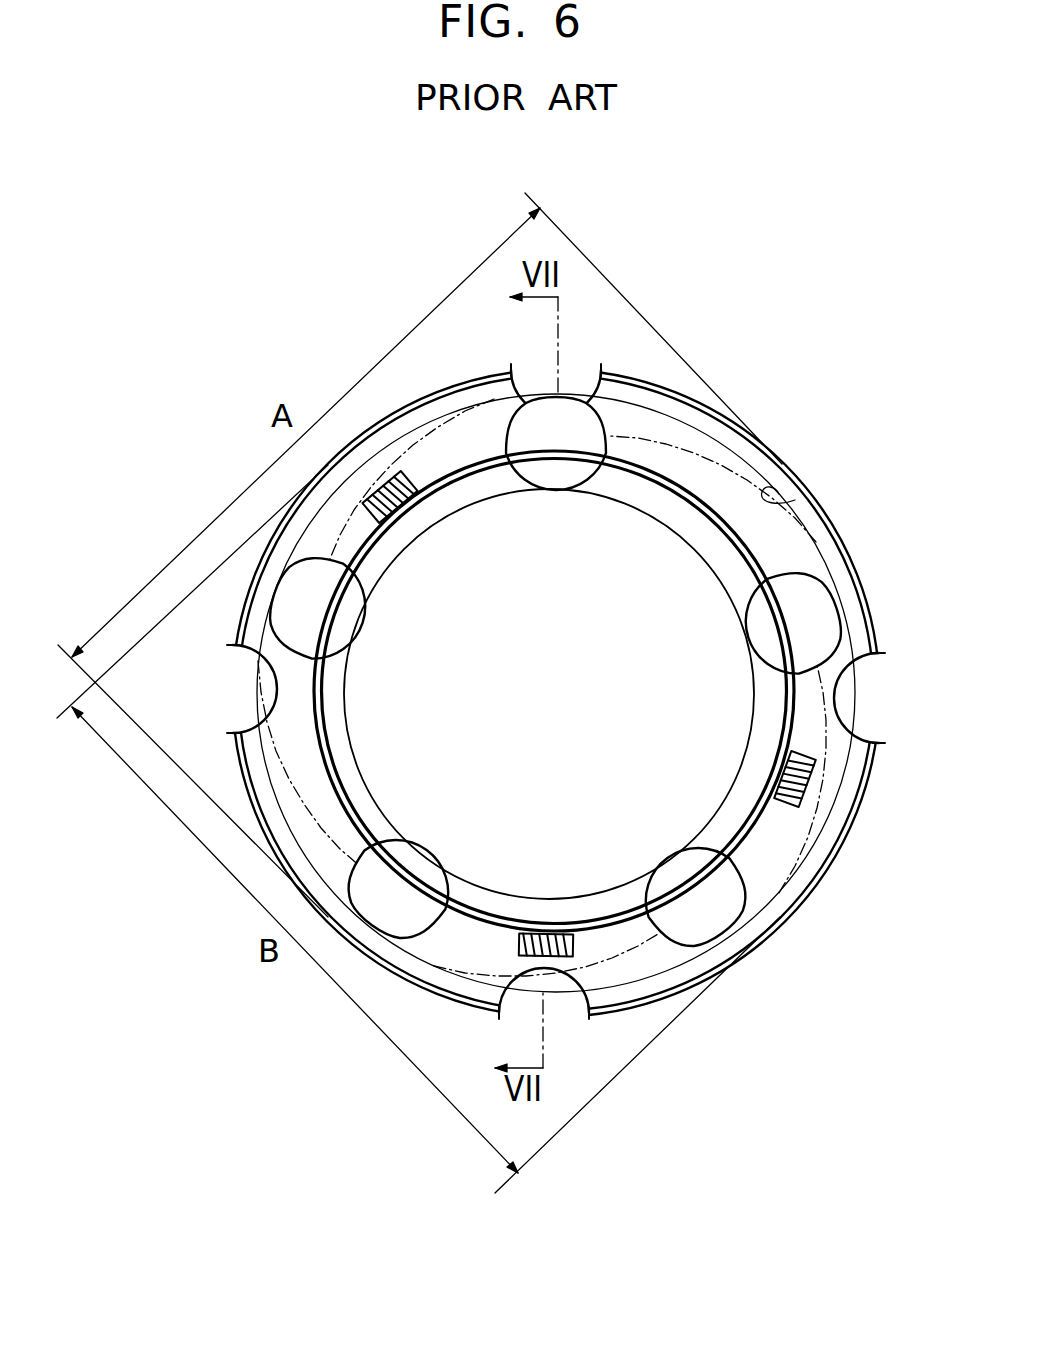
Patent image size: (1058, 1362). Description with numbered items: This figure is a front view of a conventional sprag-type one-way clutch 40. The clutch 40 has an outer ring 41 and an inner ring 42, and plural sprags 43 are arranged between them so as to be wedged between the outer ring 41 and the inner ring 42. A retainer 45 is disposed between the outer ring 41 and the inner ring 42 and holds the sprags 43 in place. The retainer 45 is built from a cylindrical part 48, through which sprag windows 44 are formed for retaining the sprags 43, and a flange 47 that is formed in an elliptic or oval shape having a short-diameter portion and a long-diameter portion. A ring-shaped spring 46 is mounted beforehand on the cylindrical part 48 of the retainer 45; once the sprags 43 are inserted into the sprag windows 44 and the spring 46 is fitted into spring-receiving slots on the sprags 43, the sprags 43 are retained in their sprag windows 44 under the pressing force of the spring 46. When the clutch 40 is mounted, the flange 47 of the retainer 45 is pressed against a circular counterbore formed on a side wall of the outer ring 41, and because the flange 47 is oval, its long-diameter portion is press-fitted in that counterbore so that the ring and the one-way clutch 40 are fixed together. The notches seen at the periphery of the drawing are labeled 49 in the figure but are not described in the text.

The one-way clutch 40 is at (813, 483).
The outer ring 41 is at (795, 500).
The inner ring 42 is at (644, 510).
The sprags 43 is at (825, 581).
The sprag windows 44 is at (765, 603).
The retainer 45 is at (773, 703).
The ring-shaped spring 46 is at (789, 829).
The flange 47 is at (788, 923).
The cylindrical part 48 is at (770, 777).
The notch 49 is at (250, 737).